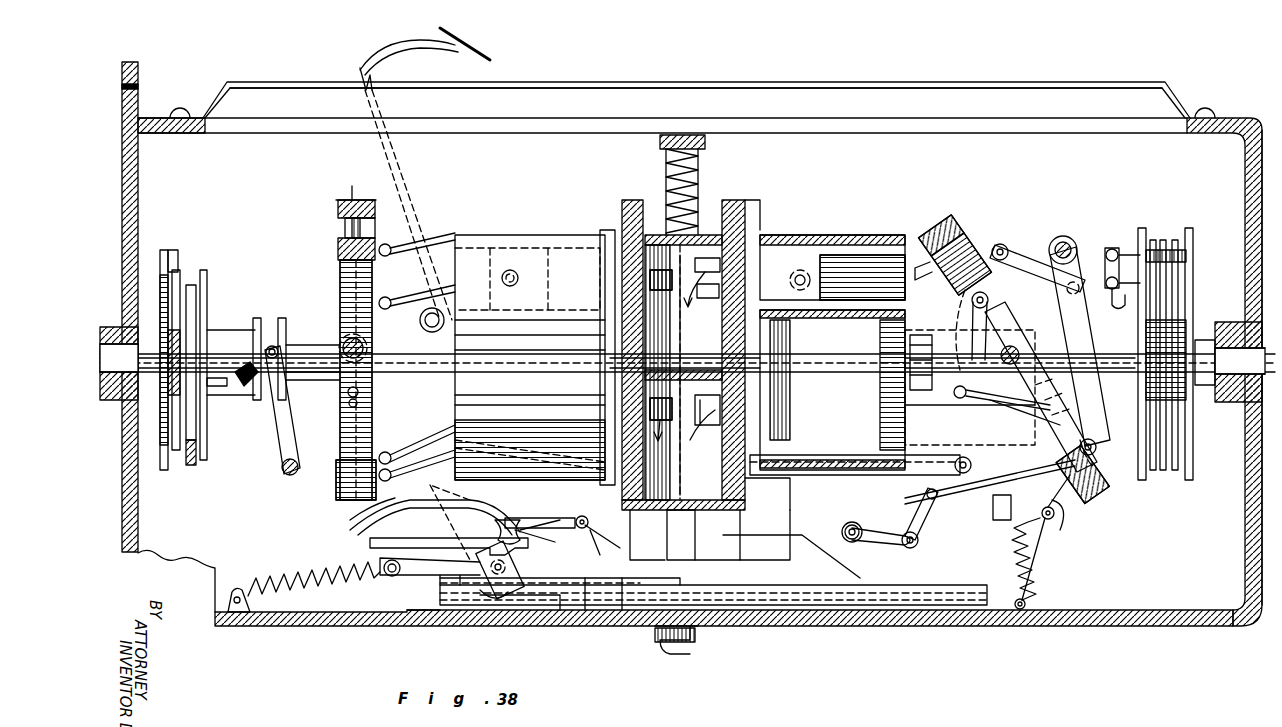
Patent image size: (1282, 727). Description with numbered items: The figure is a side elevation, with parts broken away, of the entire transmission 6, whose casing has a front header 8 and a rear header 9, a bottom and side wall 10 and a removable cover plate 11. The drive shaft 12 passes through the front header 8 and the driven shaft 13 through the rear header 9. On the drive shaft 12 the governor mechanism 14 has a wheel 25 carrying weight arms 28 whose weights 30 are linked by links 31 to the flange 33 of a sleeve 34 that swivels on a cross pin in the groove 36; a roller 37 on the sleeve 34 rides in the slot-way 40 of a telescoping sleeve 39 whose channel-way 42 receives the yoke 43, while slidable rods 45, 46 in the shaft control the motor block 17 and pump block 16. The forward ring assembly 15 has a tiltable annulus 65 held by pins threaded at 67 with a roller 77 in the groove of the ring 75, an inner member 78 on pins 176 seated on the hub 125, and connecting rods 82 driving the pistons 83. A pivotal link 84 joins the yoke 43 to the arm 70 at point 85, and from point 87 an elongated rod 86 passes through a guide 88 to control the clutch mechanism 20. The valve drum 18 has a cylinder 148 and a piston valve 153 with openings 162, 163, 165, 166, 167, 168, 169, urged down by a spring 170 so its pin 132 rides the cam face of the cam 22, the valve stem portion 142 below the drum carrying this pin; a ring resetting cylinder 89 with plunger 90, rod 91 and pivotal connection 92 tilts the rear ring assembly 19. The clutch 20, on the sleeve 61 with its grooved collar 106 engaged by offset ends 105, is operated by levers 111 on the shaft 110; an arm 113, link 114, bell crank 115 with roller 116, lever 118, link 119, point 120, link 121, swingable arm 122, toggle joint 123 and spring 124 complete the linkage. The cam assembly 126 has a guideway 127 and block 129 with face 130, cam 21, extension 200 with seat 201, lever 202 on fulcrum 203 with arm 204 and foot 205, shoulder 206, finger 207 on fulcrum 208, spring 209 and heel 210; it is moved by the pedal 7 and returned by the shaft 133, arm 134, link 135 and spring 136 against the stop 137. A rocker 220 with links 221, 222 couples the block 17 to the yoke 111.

The transmission 6 is at (605, 80).
The brake pedal 7 is at (465, 55).
The front casing header 8 is at (138, 172).
The rear casing header 9 is at (1245, 523).
The bottom and side wall 10 is at (870, 626).
The removable cover plate 11 is at (690, 86).
The drive shaft 12 is at (122, 395).
The driven shaft 13 is at (330, 488).
The governor mechanism 14 is at (176, 250).
The carrier or drive ring assembly 15 is at (348, 200).
The pump piston block 16 is at (575, 235).
The motor piston block 17 is at (828, 204).
The valve drum 18 is at (755, 205).
The rear ring assembly 19 is at (285, 300).
The clutch mechanism 20 is at (1190, 228).
The clutch cam 21 is at (782, 590).
The valve drum cam 22 is at (547, 605).
The governor wheel 25 is at (160, 270).
The weight arm 28 is at (168, 430).
The governor weight 30 is at (190, 275).
The governor link 31 is at (200, 257).
The circumferential flange 33 is at (200, 298).
The governor sleeve 34 is at (208, 385).
The circumferential groove 36 is at (622, 648).
The roller 37 is at (258, 340).
The telescoping sleeve 39 is at (225, 332).
The slot-way 40 is at (244, 388).
The channel-way 42 is at (282, 320).
The yoke 43 is at (272, 450).
The slidable rod 45 is at (300, 345).
The slidable rod 46 is at (300, 372).
The sleeve 61 is at (1040, 345).
The tiltable annulus 65 is at (338, 205).
The threaded portion 67 is at (362, 342).
The arm 70 is at (368, 400).
The ring 75 is at (345, 233).
The roller 77 is at (338, 214).
The member 78 is at (338, 258).
The connecting rod 82 is at (430, 248).
The piston 83 is at (548, 282).
The pivotal link 84 is at (338, 390).
The connection point 85 is at (370, 385).
The elongated rod 86 is at (915, 524).
The connection point 87 is at (340, 460).
The guide 88 is at (1003, 522).
The ring resetting cylinder 89 is at (745, 508).
The plunger 90 is at (835, 480).
The elongated rod 91 is at (970, 462).
The pivotal connection 92 is at (1090, 498).
The offset end 105 is at (1115, 300).
The grooved collar 106 is at (1108, 282).
The shaft 110 is at (1066, 236).
The clutch lever 111 is at (1078, 262).
The elongated arm 113 is at (1098, 452).
The link 114 is at (985, 475).
The bell crank 115 is at (922, 530).
The roller 116 is at (845, 527).
The lever 118 is at (968, 397).
The pivotal link connection 119 is at (1000, 405).
The connection point 120 is at (1090, 470).
The link 121 is at (1070, 505).
The swingable arm 122 is at (1045, 575).
The toggle joint 123 is at (1045, 512).
The coiled extensible spring 124 is at (1015, 562).
The hub 125 is at (1012, 332).
The cam assembly 126 is at (600, 545).
The guideway 127 is at (612, 610).
The cam block 129 is at (740, 555).
The cam face 130 is at (845, 548).
The cam rider pin 132 is at (705, 545).
The shaft 133 is at (445, 322).
The arm 134 is at (448, 402).
The pivotal link 135 is at (392, 578).
The coiled spring 136 is at (292, 580).
The stop 137 is at (428, 610).
The stem 142 is at (650, 555).
The valve cylinder 148 is at (640, 200).
The piston valve 153 is at (640, 331).
The elongated opening 162 is at (650, 280).
The lower elongated opening 163 is at (650, 412).
The short opening 165 is at (655, 400).
The elongated opening 166 is at (715, 425).
The single stage opening 167 is at (715, 398).
The single stage opening 168 is at (712, 260).
The single stage opening 169 is at (712, 295).
The coiled compressible spring 170 is at (700, 178).
The pin 176 is at (385, 252).
The extension 200 is at (360, 532).
The seat 201 is at (450, 540).
The lever 202 is at (435, 568).
The fulcrum 203 is at (497, 612).
The lateral arm 204 is at (450, 510).
The foot 205 is at (350, 520).
The shoulder 206 is at (503, 522).
The pivotal finger 207 is at (540, 518).
The fulcrum 208 is at (582, 515).
The spring 209 is at (528, 555).
The heel 210 is at (520, 530).
The rocker 220 is at (982, 292).
The link 221 is at (938, 335).
The link 222 is at (1020, 262).